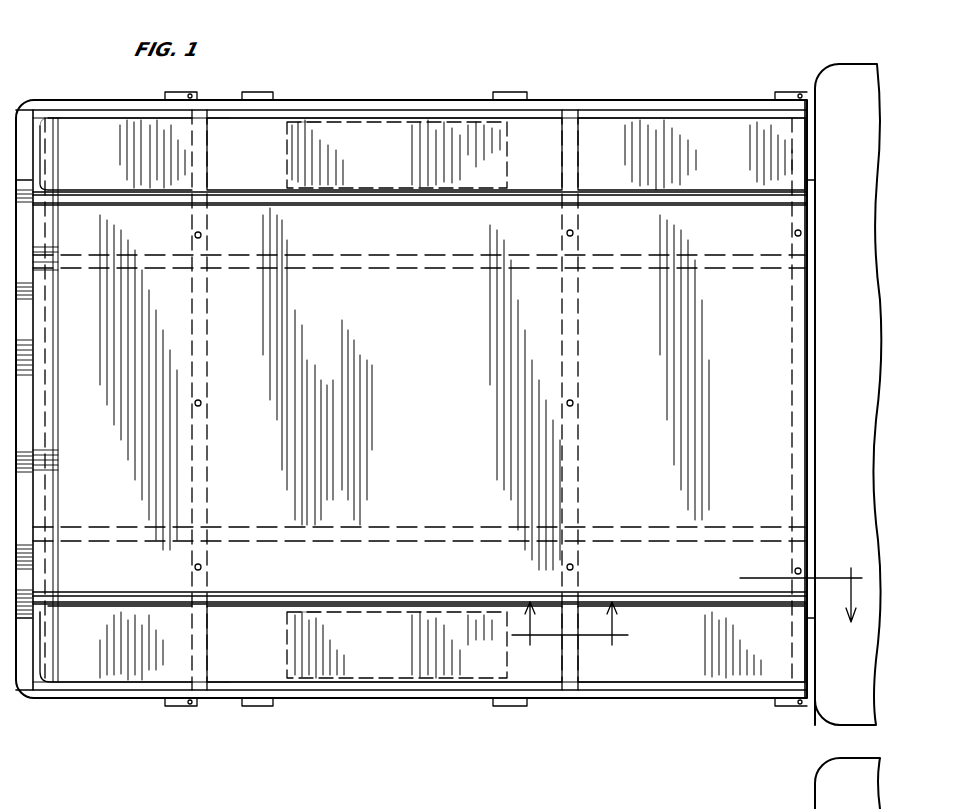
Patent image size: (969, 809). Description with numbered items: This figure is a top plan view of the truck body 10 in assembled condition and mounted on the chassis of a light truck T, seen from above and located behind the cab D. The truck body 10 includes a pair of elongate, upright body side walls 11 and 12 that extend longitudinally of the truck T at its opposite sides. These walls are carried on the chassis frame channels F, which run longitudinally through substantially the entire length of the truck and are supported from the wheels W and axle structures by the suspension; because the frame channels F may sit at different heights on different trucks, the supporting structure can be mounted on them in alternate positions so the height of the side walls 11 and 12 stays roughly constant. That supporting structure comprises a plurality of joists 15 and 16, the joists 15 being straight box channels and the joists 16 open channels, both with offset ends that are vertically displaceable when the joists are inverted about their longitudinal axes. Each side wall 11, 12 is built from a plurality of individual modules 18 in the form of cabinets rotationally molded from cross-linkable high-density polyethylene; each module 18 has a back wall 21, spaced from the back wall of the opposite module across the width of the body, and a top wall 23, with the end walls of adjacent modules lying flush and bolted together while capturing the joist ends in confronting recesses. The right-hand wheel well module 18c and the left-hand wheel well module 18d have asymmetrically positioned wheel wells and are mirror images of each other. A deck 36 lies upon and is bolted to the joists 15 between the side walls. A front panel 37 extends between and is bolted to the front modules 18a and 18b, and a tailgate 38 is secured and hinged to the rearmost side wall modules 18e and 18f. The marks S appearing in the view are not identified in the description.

The truck body 10 is at (627, 92).
The body side wall 11 is at (422, 590).
The body side wall 12 is at (437, 204).
The joist 15 is at (208, 462).
The joist 16 is at (56, 516).
The module 18 is at (172, 190).
The front module 18a is at (695, 620).
The front module 18b is at (696, 178).
The right-hand wheel well module 18c is at (406, 672).
The left-hand wheel well module 18d is at (366, 110).
The rearmost side wall module 18e is at (88, 625).
The rearmost side wall module 18f is at (78, 148).
The back wall 21 is at (293, 206).
The top wall 23 is at (387, 145).
The deck 36 is at (432, 389).
The front panel 37 is at (804, 362).
The tailgate 38 is at (27, 452).
The cab D is at (850, 82).
The frame channel F is at (378, 270).
The light truck T is at (802, 737).
The wheel W is at (433, 125).
The sliding direction symbols S is at (688, 612).